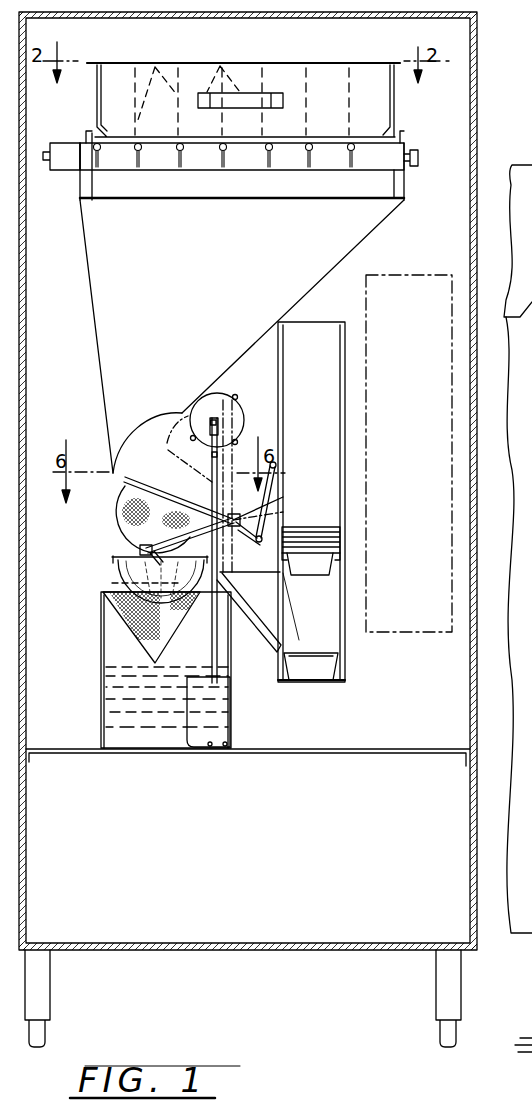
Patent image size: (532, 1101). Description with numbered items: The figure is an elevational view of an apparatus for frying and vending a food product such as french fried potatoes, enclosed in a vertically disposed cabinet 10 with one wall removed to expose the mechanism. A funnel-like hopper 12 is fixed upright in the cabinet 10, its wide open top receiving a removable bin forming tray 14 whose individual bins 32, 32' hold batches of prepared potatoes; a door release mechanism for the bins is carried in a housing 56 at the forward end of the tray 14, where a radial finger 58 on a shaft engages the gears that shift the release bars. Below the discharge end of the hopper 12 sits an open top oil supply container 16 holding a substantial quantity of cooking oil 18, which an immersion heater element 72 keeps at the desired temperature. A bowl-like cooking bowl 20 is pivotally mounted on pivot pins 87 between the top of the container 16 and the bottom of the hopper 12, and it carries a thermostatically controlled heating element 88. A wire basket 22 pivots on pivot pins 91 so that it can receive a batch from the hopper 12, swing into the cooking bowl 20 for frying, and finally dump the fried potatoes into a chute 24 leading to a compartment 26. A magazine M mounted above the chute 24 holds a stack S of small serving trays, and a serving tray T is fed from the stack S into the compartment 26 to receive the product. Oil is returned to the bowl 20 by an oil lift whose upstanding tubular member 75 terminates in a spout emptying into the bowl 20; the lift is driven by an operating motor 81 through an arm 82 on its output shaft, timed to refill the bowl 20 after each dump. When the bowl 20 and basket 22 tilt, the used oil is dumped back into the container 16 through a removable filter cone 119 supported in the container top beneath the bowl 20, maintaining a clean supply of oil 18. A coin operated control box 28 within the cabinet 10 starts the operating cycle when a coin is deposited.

The cabinet 10 is at (474, 186).
The hopper 12 is at (90, 319).
The bin forming tray 14 is at (329, 65).
The oil supply container 16 is at (102, 643).
The cooking oil 18 is at (167, 716).
The cooking bowl 20 is at (118, 577).
The wire basket 22 is at (123, 503).
The chute 24 is at (258, 620).
The compartment 26 is at (338, 662).
The coin operated control box 28 is at (433, 631).
The hopper partition 32 is at (157, 73).
The bins 32' is at (222, 62).
The housing 56 is at (116, 158).
The radial finger 58 is at (59, 160).
The immersion heater element 72 is at (110, 712).
The upstanding tubular member 75 is at (216, 653).
The operating motor 81 is at (213, 397).
The arm 82 is at (193, 437).
The pivot pins 87 is at (139, 549).
The heating element 88 is at (112, 583).
The pivot pins 91 is at (266, 497).
The filter cone 119 is at (130, 603).
The stack S is at (312, 527).
The serving tray T is at (311, 665).
The magazine M is at (346, 454).